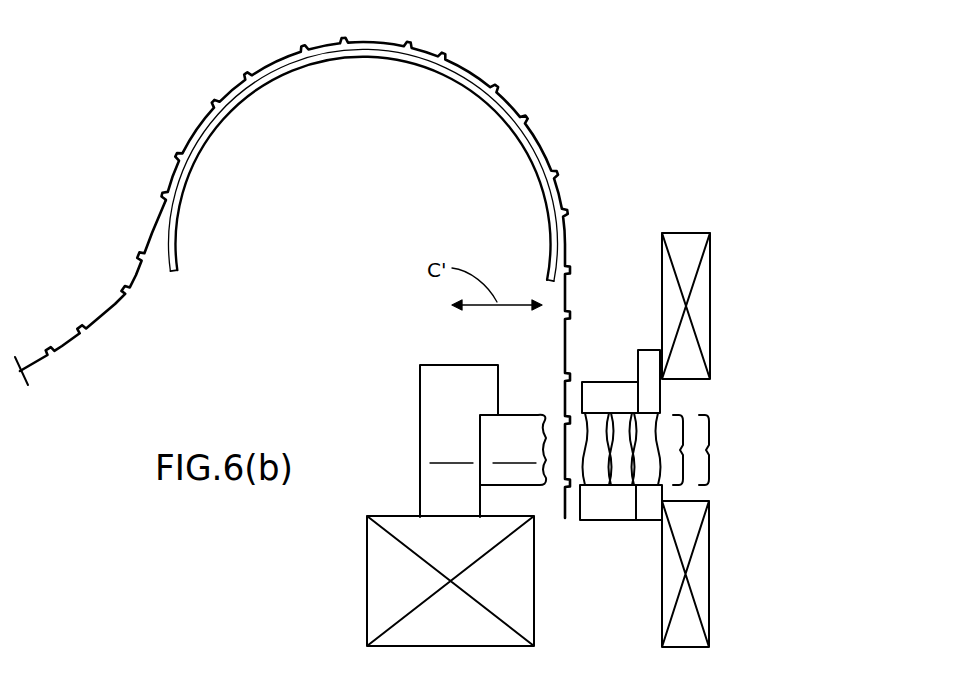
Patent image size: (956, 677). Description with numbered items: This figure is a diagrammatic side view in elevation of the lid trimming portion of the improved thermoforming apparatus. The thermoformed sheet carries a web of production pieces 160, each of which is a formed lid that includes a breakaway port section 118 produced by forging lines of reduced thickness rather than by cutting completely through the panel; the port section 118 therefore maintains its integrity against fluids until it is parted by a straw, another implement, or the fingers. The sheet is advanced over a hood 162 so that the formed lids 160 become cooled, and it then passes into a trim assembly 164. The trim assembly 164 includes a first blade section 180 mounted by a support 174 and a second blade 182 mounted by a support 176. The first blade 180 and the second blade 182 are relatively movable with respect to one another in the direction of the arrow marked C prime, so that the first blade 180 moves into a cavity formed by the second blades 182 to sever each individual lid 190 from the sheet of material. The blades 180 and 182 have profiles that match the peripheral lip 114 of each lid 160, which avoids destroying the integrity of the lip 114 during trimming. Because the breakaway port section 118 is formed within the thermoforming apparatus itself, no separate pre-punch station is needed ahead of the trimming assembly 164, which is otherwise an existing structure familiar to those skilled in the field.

The production piece 160 is at (516, 78).
The hood 162 is at (409, 63).
The peripheral lip 114 is at (521, 117).
The trim assembly 164 is at (622, 212).
The support 174 is at (437, 385).
The first blade section 180 is at (528, 420).
The second blade 182 is at (591, 388).
The support 176 is at (647, 372).
The breakaway port section 118 is at (708, 446).
The individual lid 190 is at (778, 407).